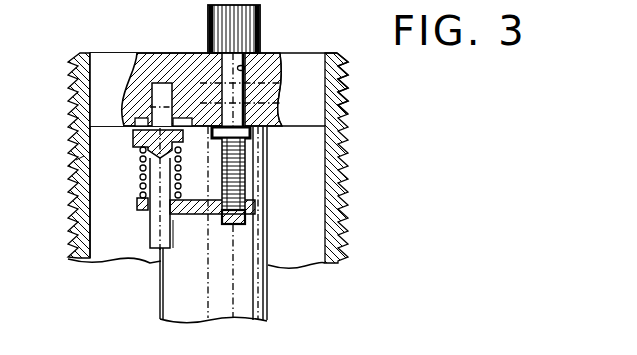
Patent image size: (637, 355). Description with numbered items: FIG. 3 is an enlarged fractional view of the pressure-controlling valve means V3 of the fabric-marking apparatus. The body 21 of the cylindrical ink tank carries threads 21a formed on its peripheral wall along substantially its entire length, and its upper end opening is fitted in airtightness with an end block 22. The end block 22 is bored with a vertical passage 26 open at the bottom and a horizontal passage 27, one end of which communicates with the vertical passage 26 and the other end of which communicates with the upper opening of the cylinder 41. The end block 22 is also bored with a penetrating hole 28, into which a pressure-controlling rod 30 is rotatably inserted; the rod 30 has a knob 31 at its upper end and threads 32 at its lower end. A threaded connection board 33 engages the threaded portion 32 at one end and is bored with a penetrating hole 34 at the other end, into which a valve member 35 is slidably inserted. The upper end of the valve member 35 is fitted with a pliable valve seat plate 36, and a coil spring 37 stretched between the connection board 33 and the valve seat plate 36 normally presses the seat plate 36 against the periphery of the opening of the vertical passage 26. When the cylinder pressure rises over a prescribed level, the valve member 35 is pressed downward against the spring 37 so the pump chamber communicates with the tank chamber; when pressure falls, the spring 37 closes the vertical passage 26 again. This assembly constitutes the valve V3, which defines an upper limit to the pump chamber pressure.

The body 21 is at (78, 231).
The threads 21a is at (346, 73).
The end block 22 is at (163, 54).
The vertical passage 26 is at (157, 97).
The horizontal passage 27 is at (190, 90).
The penetrating hole 28 is at (258, 55).
The pressure-controlling rod 30 is at (248, 146).
The knob 31 is at (262, 13).
The threads 32 is at (240, 188).
The threaded connection board 33 is at (186, 215).
The penetrating hole 34 is at (153, 222).
The valve member 35 is at (139, 153).
The pliable valve seat plate 36 is at (136, 139).
The coil spring 37 is at (139, 195).
The cylinder 41 is at (266, 308).
The pressure-controlling valve means V3 is at (92, 160).